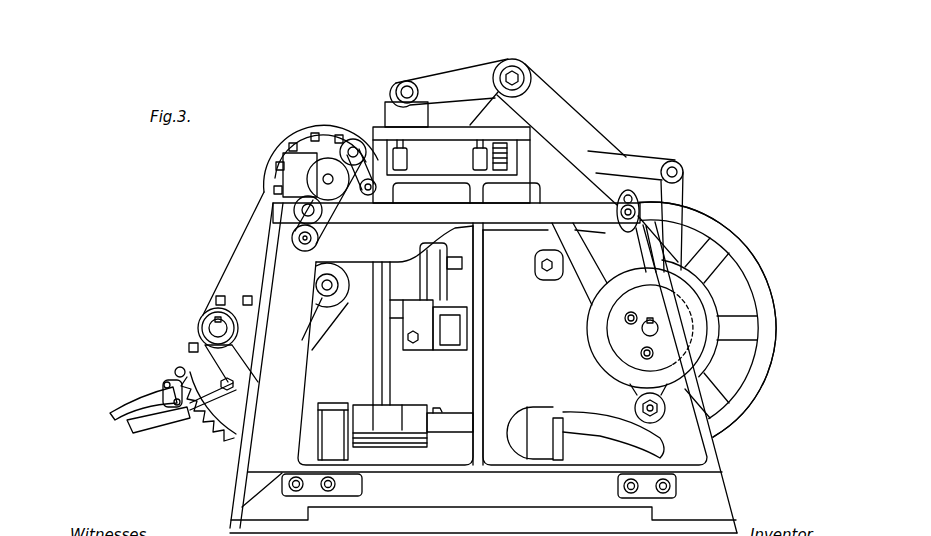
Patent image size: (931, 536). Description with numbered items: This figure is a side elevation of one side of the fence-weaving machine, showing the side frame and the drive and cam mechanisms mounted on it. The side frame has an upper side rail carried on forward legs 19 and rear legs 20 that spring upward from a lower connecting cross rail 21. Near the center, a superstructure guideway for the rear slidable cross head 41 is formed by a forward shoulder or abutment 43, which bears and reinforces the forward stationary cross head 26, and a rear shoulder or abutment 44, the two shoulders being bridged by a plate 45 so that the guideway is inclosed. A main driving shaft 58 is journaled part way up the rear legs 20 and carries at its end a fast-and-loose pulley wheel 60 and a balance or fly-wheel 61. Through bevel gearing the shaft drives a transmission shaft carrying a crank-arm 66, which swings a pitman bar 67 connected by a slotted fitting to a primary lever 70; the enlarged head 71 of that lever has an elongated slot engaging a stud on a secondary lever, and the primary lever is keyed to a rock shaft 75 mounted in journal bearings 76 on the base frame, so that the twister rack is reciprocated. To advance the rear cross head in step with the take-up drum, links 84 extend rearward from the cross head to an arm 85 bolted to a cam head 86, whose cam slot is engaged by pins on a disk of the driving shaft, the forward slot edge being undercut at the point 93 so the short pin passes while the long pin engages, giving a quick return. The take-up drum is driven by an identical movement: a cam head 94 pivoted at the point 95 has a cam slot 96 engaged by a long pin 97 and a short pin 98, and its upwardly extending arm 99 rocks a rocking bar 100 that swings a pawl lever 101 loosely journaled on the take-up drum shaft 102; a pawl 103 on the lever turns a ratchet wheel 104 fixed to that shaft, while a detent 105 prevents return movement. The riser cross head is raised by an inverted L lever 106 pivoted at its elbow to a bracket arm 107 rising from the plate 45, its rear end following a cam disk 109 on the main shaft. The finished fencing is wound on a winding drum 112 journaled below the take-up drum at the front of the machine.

The forward legs 19 is at (296, 371).
The rear legs 20 is at (700, 432).
The lower connecting cross rail 21 is at (481, 519).
The forward stationary cross head 26 is at (413, 155).
The rear slidable cross head 41 is at (473, 159).
The forward shoulder or abutment 43 is at (366, 131).
The rear shoulder or abutment 44 is at (523, 150).
The plate 45 is at (442, 136).
The main driving shaft 58 is at (642, 329).
The fast-and-loose pulley wheel 60 is at (740, 275).
The balance or fly-wheel 61 is at (720, 220).
The crank-arm 66 is at (442, 246).
The pitman bar 67 is at (410, 270).
The primary lever 70 is at (400, 336).
The enlarged head 71 is at (395, 320).
The rock shaft 75 is at (440, 430).
The journal bearings 76 is at (560, 440).
The links 84 is at (640, 160).
The arm 85 is at (687, 206).
The cam head 86 is at (330, 398).
The undercut point 93 is at (715, 383).
The cam head 94 is at (733, 300).
The pivot point 95 is at (665, 407).
The cam slot 96 is at (718, 262).
The long pin 97 is at (632, 311).
The short pin 98 is at (647, 360).
The upwardly extending arm 99 is at (643, 230).
The rocking bar 100 is at (513, 212).
The pawl lever 101 is at (325, 224).
The take-up drum shaft 102 is at (327, 180).
The pawl 103 is at (322, 137).
The ratchet wheel 104 is at (307, 154).
The detent 105 is at (366, 222).
The inverted L lever 106 is at (581, 136).
The bracket arm 107 is at (508, 101).
The cam disk 109 is at (720, 315).
The winding drum 112 is at (200, 322).